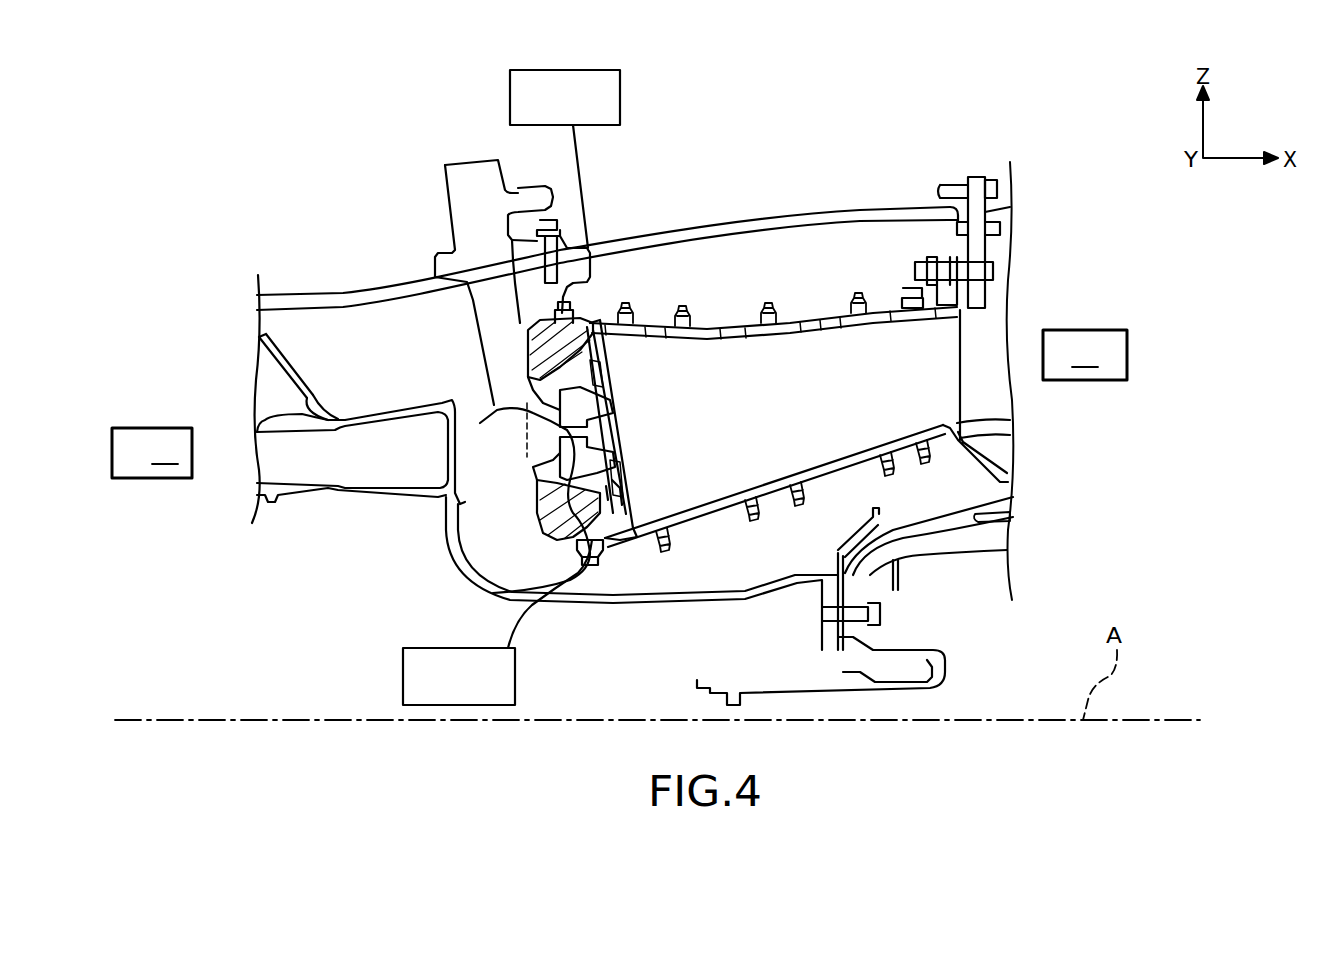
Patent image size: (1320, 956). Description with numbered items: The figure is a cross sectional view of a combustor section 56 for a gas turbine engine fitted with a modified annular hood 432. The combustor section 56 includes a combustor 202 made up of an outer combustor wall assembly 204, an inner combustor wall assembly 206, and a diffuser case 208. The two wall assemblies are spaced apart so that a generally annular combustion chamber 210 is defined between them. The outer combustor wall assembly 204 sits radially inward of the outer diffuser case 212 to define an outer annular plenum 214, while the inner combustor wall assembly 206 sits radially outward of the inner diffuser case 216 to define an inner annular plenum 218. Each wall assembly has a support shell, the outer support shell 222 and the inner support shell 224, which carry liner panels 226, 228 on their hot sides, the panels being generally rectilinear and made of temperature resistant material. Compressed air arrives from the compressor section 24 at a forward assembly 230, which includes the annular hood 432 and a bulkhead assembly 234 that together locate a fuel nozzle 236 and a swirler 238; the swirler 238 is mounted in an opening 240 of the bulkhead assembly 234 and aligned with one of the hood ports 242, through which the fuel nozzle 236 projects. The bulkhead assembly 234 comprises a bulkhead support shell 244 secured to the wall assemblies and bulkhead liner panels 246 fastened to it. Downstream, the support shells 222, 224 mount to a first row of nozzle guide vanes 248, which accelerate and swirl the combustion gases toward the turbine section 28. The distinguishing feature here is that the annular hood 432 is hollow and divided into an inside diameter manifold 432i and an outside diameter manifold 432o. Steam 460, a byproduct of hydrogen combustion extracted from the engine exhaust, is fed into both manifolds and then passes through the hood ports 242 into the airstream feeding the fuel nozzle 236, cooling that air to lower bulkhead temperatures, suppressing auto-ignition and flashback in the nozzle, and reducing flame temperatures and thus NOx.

The compressor section 24 is at (192, 453).
The turbine section 28 is at (978, 355).
The combustor section 56 is at (904, 150).
The combustor 202 is at (966, 237).
The outer combustor wall assembly 204 is at (800, 302).
The inner combustor wall assembly 206 is at (851, 466).
The diffuser case 208 is at (903, 204).
The combustion chamber 210 is at (851, 400).
The outer diffuser case 212 is at (745, 214).
The outer annular plenum 214 is at (763, 270).
The inner diffuser case 216 is at (603, 603).
The inner annular plenum 218 is at (747, 570).
The outer support shell 222 is at (908, 289).
The inner support shell 224 is at (818, 480).
The outer liner panels 226 is at (726, 332).
The inner liner panels 228 is at (718, 488).
The forward assembly 230 is at (548, 546).
The bulkhead assembly 234 is at (617, 372).
The fuel nozzle 236 is at (502, 247).
The swirler 238 is at (615, 418).
The opening 240 is at (620, 450).
The hood ports 242 is at (558, 414).
The bulkhead support shell 244 is at (556, 522).
The bulkhead liner panels 246 is at (625, 489).
The nozzle guide vanes 248 is at (1001, 393).
The annular hood 432 is at (516, 428).
The outside diameter manifold 432o is at (545, 352).
The inside diameter manifold 432i is at (555, 512).
The steam 460 is at (508, 86).